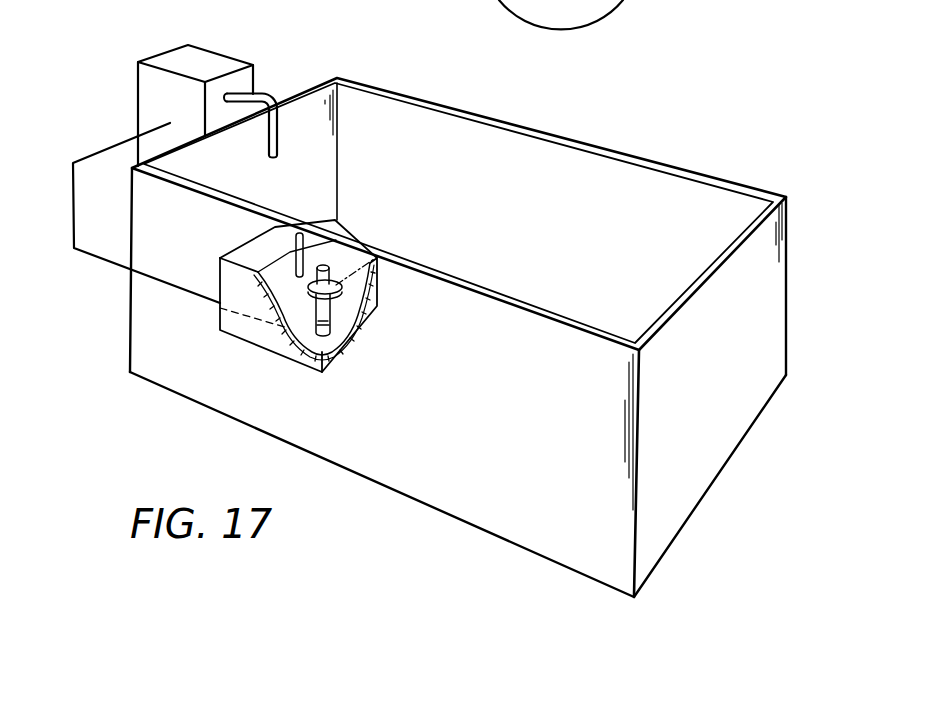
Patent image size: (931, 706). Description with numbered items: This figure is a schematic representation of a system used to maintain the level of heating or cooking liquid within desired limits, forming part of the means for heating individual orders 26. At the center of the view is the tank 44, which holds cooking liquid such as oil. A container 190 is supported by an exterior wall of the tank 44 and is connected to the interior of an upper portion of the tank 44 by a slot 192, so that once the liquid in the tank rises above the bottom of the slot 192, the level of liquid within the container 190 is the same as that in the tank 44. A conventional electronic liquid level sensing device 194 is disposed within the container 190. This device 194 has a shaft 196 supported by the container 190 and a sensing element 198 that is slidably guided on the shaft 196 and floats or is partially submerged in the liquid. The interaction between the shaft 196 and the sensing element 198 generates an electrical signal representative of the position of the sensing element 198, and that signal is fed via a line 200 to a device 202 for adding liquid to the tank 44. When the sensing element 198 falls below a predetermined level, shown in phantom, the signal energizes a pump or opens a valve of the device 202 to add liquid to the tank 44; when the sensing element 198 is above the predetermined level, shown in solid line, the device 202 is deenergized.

The means for heating individual orders 26 is at (458, 337).
The tank 44 is at (627, 156).
The container 190 is at (345, 353).
The slot 192 is at (294, 248).
The electronic liquid level sensing device 194 is at (345, 263).
The shaft 196 is at (324, 265).
The sensing element 198 is at (320, 292).
The line 200 is at (95, 258).
The device for adding liquid 202 is at (203, 50).